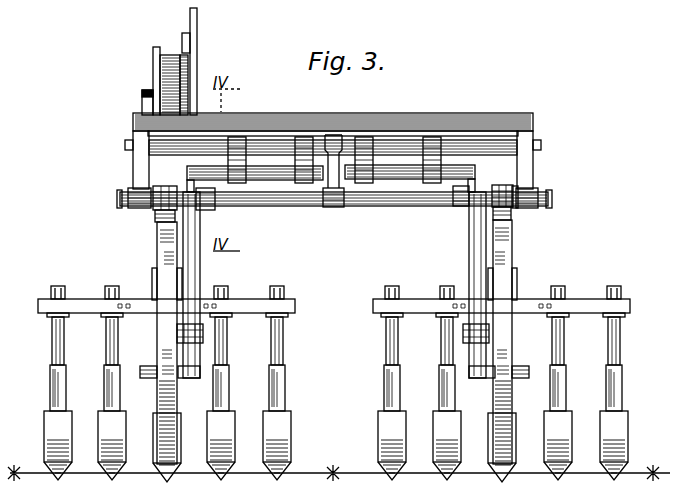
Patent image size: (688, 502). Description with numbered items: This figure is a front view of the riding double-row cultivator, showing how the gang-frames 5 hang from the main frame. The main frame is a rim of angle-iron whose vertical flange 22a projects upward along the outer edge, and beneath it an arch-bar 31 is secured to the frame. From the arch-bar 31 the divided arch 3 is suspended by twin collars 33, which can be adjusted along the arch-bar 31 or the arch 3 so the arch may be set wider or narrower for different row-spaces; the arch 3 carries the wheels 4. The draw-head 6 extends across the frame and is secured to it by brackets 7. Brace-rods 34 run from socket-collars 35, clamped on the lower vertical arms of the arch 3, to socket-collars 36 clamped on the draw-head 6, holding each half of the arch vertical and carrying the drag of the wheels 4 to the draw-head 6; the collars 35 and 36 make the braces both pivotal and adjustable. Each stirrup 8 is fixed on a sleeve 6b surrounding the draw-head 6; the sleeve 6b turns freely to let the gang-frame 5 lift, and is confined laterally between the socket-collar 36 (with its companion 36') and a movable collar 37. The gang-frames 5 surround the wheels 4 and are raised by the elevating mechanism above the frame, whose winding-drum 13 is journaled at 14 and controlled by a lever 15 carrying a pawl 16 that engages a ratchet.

The arch 3 is at (201, 268).
The wheels 4 is at (170, 350).
The gang-frames 5 is at (137, 303).
The draw-head 6 is at (350, 207).
The sleeve 6b is at (495, 180).
The brackets 7 is at (140, 167).
The stirrups 8 is at (157, 224).
The winding-drum 13 is at (170, 55).
The journal 14 is at (145, 99).
The lever 15 is at (197, 34).
The pawl 16 is at (190, 43).
The vertical flange 22a is at (421, 108).
The arch-bar 31 is at (268, 146).
The twin collars 33 is at (246, 183).
The brace-rods 34 is at (201, 278).
The socket-collar 35 is at (203, 335).
The socket-collar 36 is at (331, 198).
The hanger 36' is at (213, 210).
The movable collar 37 is at (152, 200).